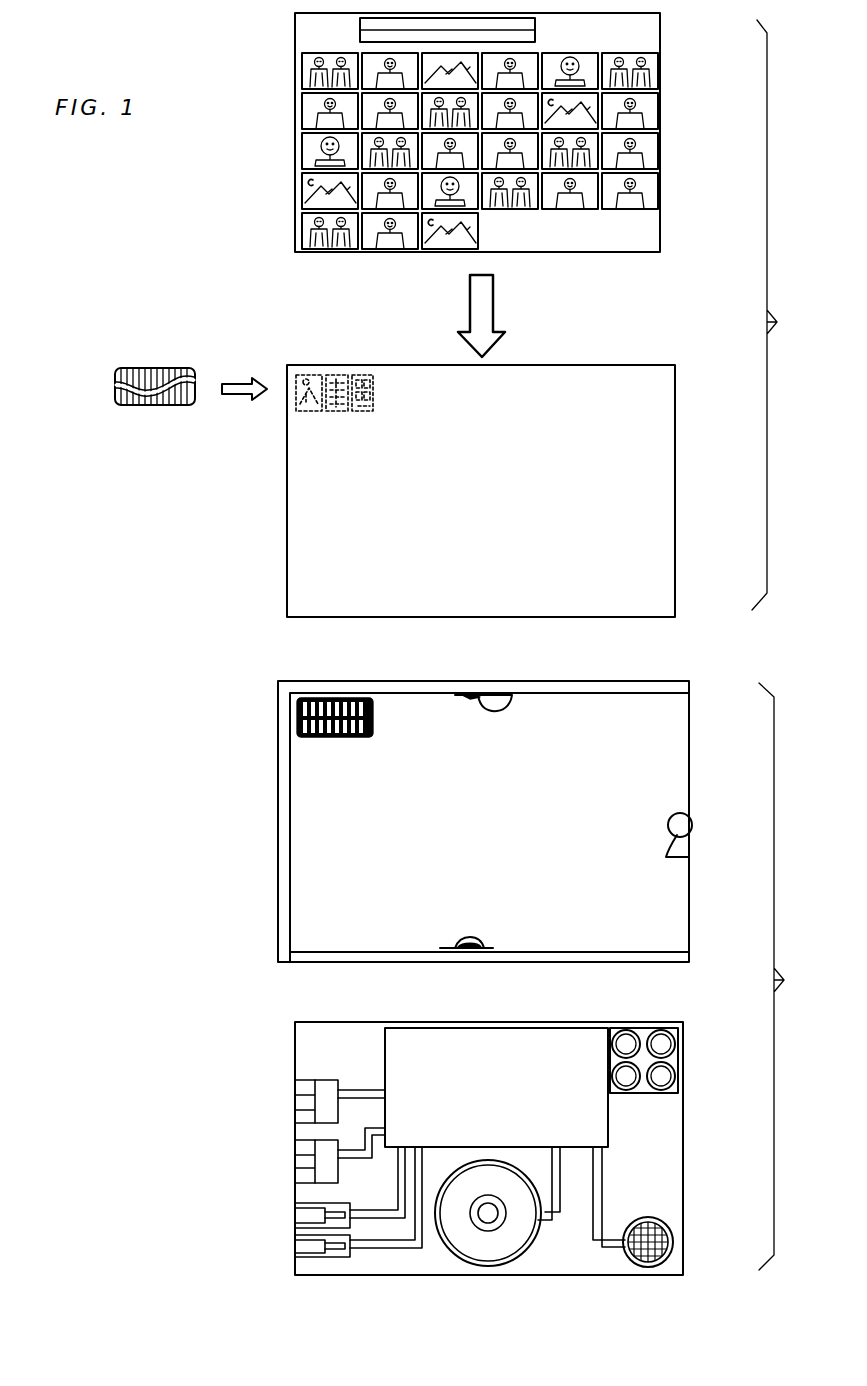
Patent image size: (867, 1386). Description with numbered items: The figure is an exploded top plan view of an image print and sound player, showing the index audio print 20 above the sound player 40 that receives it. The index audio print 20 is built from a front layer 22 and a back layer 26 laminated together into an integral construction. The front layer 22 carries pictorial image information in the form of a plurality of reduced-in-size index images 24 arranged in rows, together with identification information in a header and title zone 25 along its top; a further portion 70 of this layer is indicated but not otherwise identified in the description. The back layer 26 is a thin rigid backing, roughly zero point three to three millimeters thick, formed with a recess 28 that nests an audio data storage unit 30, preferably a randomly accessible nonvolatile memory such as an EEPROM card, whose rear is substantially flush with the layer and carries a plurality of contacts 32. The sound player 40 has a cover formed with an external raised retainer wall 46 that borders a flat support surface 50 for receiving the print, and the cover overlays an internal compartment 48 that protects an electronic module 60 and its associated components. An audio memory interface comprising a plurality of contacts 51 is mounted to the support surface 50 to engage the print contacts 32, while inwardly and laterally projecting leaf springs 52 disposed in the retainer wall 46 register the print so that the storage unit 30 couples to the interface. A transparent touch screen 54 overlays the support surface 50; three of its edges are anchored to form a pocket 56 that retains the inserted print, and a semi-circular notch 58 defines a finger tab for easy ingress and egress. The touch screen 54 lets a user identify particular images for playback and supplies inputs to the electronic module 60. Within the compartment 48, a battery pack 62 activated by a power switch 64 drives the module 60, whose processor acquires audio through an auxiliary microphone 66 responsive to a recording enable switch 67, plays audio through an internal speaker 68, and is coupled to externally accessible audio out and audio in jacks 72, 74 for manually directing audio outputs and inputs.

The index audio print 20 is at (783, 315).
The front layer 22 is at (660, 228).
The reduced-in-size index images 24 is at (302, 152).
The header and title zone 25 is at (360, 22).
The back layer 26 is at (675, 452).
The recess 28 is at (340, 413).
The audio data storage unit 30 is at (148, 368).
The contacts 32 is at (170, 405).
The sound player 40 is at (791, 976).
The retainer wall 46 is at (278, 812).
The internal compartment 48 is at (321, 1021).
The support surface 50 is at (683, 822).
The audio memory interface contacts 51 is at (297, 708).
The leaf springs 52 is at (512, 693).
The transparent touch screen 54 is at (320, 878).
The pocket 56 is at (689, 758).
The semi-circular notch 58 is at (689, 857).
The electronic module 60 is at (547, 1028).
The battery pack 62 is at (672, 1072).
The power switch 64 is at (295, 1103).
The auxiliary microphone 66 is at (668, 1230).
The recording enable switch 67 is at (295, 1158).
The internal speaker 68 is at (530, 1250).
The display screen area 70 is at (597, 233).
The audio out jack 72 is at (295, 1213).
The audio in jack 74 is at (295, 1243).